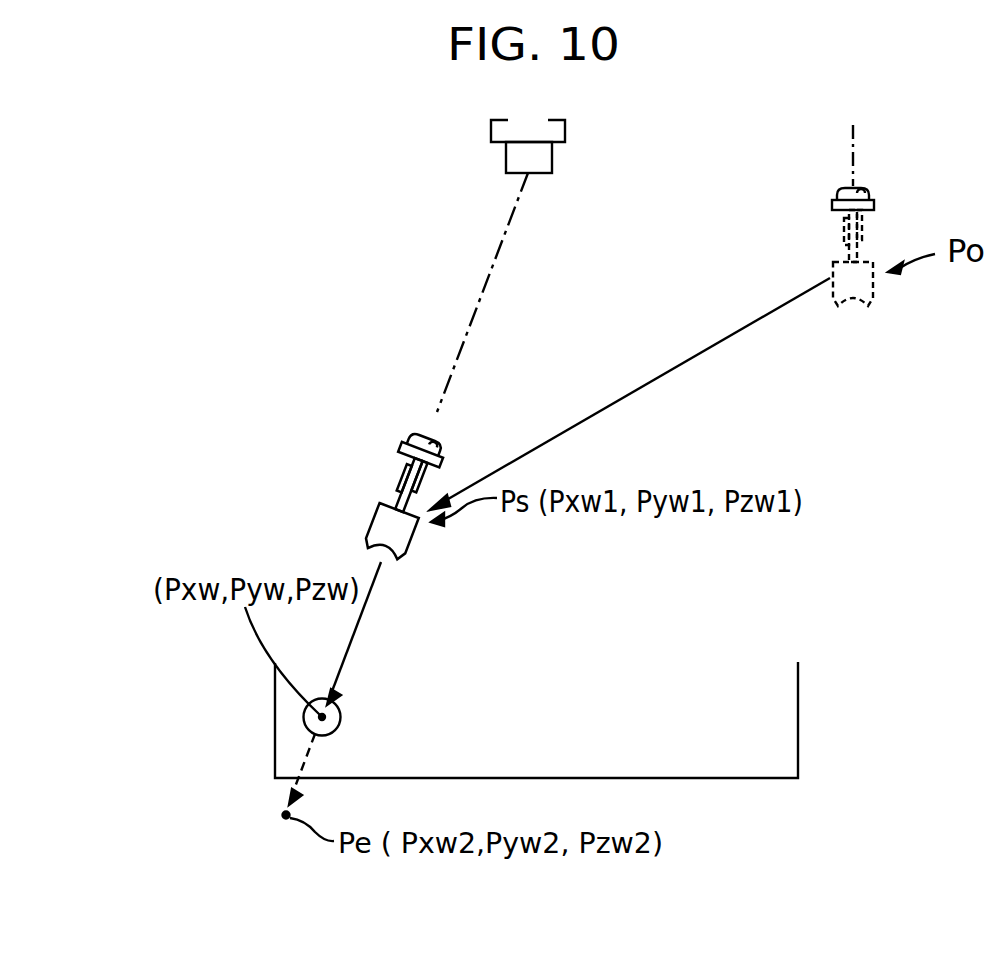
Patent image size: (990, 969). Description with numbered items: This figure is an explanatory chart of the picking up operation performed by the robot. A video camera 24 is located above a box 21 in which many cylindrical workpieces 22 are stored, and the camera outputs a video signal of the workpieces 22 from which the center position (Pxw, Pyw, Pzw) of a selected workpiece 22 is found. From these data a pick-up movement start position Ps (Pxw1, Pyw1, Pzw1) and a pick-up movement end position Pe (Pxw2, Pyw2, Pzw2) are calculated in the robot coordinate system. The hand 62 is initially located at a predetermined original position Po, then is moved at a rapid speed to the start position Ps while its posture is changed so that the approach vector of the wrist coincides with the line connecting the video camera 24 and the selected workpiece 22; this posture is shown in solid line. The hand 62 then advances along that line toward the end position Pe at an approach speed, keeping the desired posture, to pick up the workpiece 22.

The video camera 24 is at (503, 132).
The hand 62 is at (407, 538).
The workpiece 22 is at (341, 720).
The box 21 is at (800, 697).